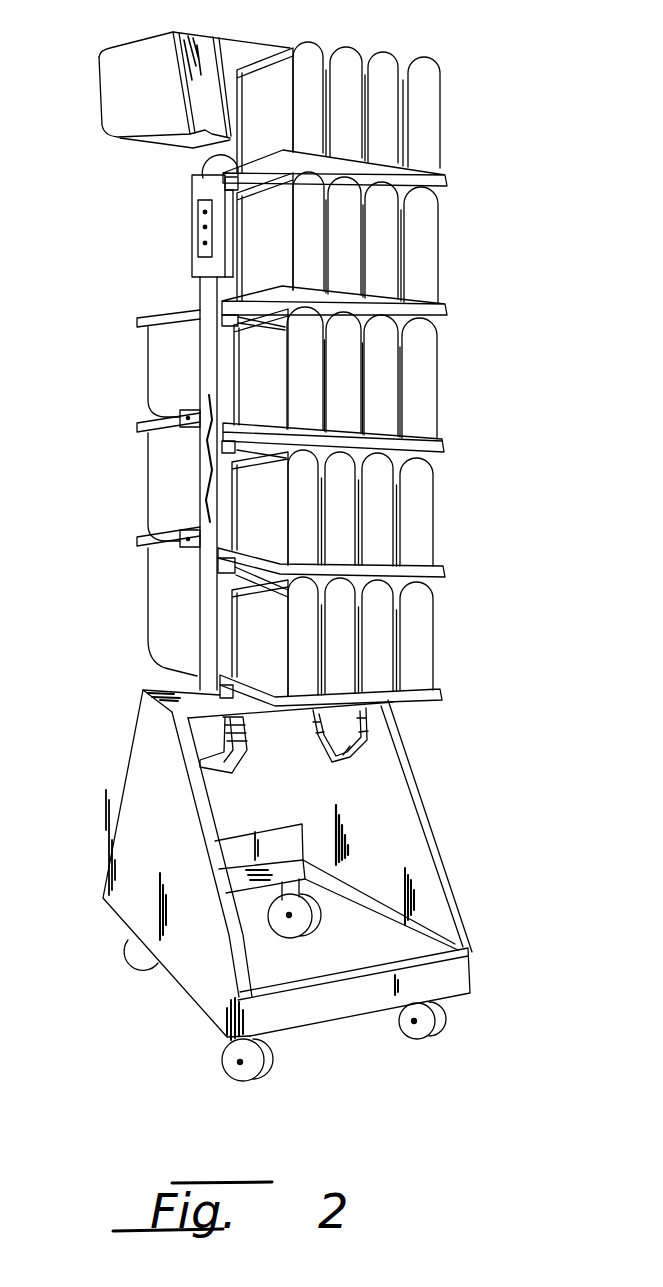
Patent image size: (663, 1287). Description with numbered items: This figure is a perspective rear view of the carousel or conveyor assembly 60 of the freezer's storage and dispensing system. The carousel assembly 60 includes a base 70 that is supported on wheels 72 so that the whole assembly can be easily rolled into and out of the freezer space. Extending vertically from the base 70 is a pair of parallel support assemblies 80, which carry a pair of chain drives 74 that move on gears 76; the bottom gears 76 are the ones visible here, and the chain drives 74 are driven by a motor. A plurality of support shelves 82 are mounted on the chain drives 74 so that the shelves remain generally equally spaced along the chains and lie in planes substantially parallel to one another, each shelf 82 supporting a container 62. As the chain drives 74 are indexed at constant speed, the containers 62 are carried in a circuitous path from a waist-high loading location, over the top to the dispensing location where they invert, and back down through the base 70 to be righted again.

The carousel assembly 60 is at (110, 513).
The containers 62 is at (430, 237).
The base 70 is at (118, 806).
The wheels 72 is at (265, 1063).
The chain drives 74 is at (227, 777).
The gears 76 is at (326, 740).
The support assemblies 80 is at (208, 288).
The support shelves 82 is at (448, 173).